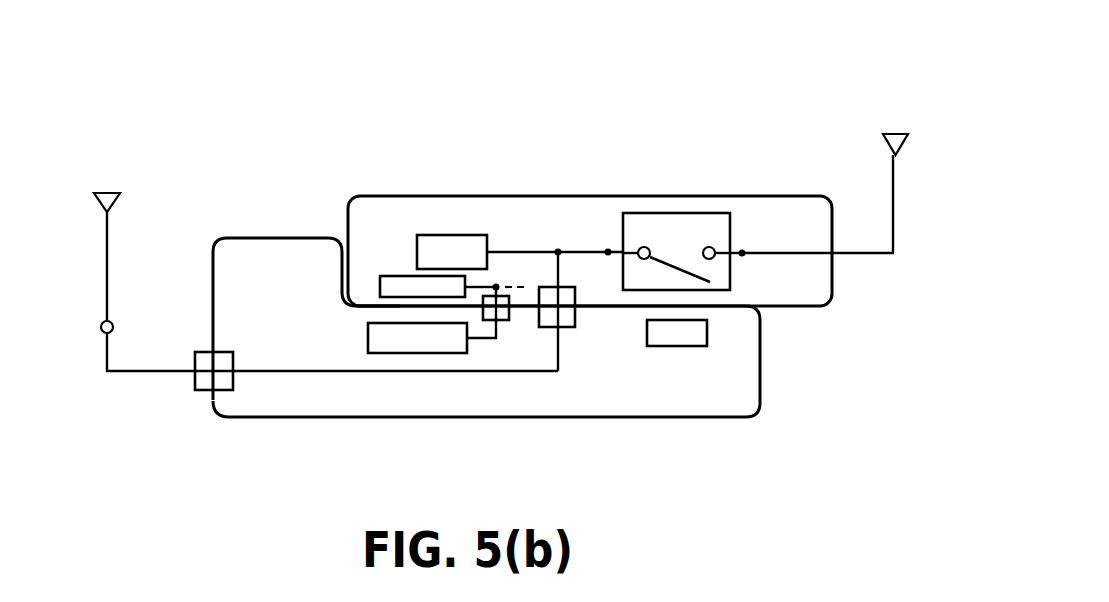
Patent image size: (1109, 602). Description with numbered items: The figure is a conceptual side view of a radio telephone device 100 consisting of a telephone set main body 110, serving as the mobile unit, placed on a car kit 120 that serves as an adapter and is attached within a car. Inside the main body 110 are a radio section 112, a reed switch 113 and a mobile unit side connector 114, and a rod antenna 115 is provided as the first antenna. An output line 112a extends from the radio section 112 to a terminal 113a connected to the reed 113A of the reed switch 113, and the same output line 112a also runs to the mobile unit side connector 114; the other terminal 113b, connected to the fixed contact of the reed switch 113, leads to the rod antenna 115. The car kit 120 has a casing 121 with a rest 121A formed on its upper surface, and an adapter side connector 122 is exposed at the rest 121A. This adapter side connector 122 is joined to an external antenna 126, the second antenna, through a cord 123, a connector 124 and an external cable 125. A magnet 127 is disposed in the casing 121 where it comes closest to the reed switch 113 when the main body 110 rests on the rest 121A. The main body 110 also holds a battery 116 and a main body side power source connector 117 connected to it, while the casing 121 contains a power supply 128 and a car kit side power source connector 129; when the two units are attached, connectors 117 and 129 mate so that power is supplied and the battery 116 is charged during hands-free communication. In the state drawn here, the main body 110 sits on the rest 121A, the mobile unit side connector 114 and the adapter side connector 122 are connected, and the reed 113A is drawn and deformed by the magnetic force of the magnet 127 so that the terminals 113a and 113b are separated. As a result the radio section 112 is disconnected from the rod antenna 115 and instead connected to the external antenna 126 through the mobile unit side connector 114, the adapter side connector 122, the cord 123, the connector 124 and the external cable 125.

The radio telephone device 100 is at (267, 123).
The telephone set main body 110 is at (350, 195).
The radio section 112 is at (450, 245).
The output line 112a is at (527, 250).
The reed switch 113 is at (703, 202).
The reed 113A is at (672, 258).
The terminal 113a is at (608, 249).
The terminal 113b is at (742, 252).
The mobile unit side connector 114 is at (570, 295).
The rod antenna 115 is at (883, 132).
The battery 116 is at (402, 278).
The main body side power source connector 117 is at (510, 297).
The car kit 120 is at (215, 237).
The casing 121 is at (433, 420).
The rest 121A is at (370, 298).
The adapter side connector 122 is at (567, 320).
The cord 123 is at (320, 373).
The connector 124 is at (210, 392).
The external cable 125 is at (122, 372).
The external antenna 126 is at (107, 192).
The magnet 127 is at (687, 350).
The power supply 128 is at (413, 343).
The car kit side power source connector 129 is at (505, 310).